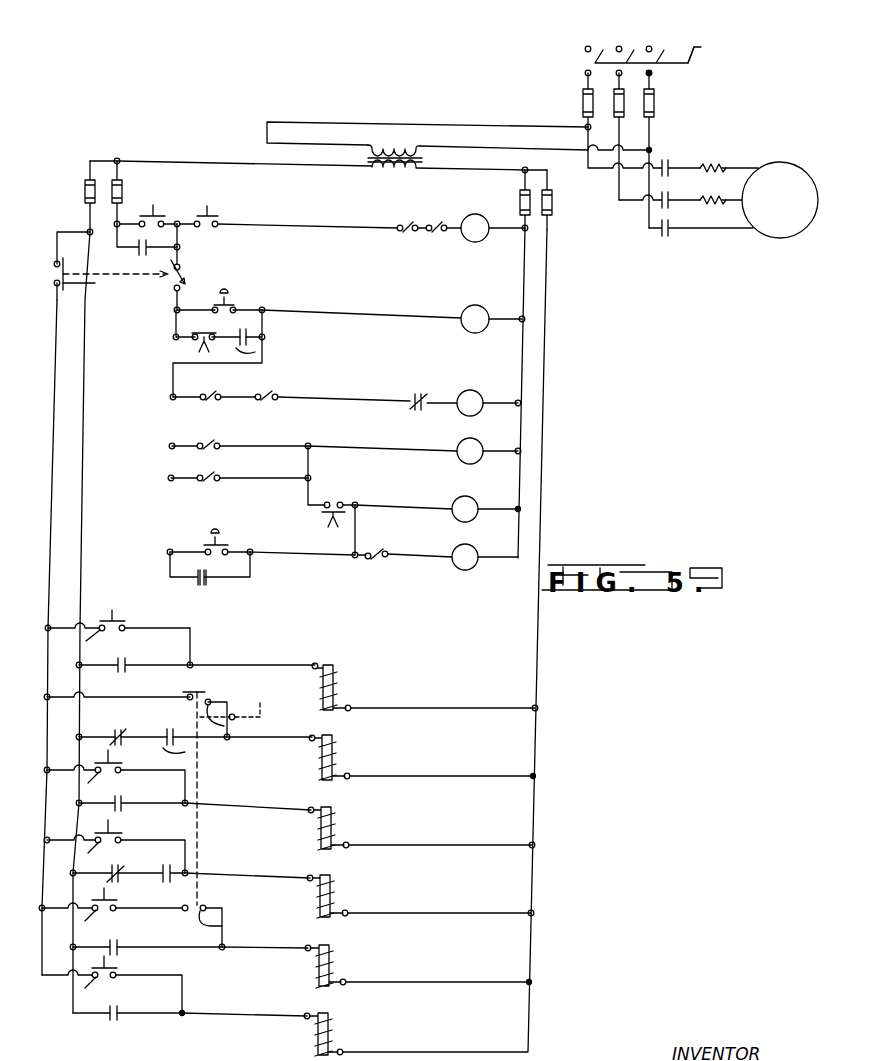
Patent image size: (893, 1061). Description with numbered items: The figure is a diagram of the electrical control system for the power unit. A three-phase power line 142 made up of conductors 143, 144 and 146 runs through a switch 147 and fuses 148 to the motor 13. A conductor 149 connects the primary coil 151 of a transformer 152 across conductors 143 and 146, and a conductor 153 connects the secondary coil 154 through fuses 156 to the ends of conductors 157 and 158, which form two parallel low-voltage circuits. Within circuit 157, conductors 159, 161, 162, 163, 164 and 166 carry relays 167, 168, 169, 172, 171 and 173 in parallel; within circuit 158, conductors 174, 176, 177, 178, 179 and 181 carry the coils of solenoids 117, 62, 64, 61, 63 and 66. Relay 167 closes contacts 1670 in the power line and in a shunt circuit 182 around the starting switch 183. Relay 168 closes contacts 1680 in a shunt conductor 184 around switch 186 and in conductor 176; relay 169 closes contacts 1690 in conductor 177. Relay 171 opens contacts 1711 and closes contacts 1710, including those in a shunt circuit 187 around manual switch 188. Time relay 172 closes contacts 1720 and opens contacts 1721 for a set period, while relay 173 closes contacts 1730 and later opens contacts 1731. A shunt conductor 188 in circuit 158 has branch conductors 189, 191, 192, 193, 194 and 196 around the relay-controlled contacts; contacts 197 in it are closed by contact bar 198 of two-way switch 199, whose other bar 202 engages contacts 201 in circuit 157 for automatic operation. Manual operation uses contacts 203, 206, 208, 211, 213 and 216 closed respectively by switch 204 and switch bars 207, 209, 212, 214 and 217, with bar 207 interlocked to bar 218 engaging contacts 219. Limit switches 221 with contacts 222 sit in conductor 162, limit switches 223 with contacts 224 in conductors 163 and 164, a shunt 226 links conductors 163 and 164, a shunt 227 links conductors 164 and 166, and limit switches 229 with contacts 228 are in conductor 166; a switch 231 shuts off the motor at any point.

The motor 13 is at (784, 239).
The three-phase power line 142 is at (572, 47).
The conductor 143 is at (593, 45).
The conductor 144 is at (623, 46).
The conductor 146 is at (655, 46).
The switch 147 is at (672, 68).
The fuses 148 is at (653, 104).
The conductor 149 is at (422, 123).
The primary coil 151 is at (393, 140).
The transformer 152 is at (436, 160).
The conductor 153 is at (175, 161).
The secondary coil 154 is at (376, 172).
The fuses 156 is at (86, 185).
The conductor 157 is at (121, 222).
The conductor 158 is at (91, 516).
The conductor 159 is at (346, 236).
The conductor 161 is at (345, 313).
The conductor 162 is at (333, 400).
The conductor 163 is at (371, 452).
The conductor 164 is at (384, 505).
The conductor 166 is at (280, 557).
The relay 167 is at (470, 240).
The relay 168 is at (483, 308).
The relay 169 is at (488, 382).
The relay 171 is at (466, 496).
The time relay 172 is at (467, 440).
The relay 173 is at (467, 546).
The conductor 174 is at (402, 706).
The conductor 176 is at (405, 774).
The conductor 177 is at (402, 845).
The conductor 178 is at (405, 913).
The conductor 179 is at (402, 982).
The conductor 181 is at (424, 1052).
The shunt circuit 182 is at (160, 247).
The starting switch 183 is at (160, 212).
The shunt conductor 184 is at (172, 333).
The switch 186 is at (231, 306).
The shunt circuit 187 is at (168, 578).
The shunt circuit conductor 188 is at (55, 445).
The branch conductor 189 is at (185, 634).
The branch conductor 191 is at (164, 696).
The branch conductor 192 is at (199, 783).
The branch conductor 193 is at (199, 836).
The branch conductor 194 is at (198, 903).
The branch conductor 196 is at (182, 975).
The contacts 197 is at (55, 285).
The contact bar 198 is at (66, 283).
The two-way contact switch 199 is at (134, 268).
The contacts 201 is at (186, 272).
The contact bar 202 is at (172, 290).
The contacts 203 is at (95, 634).
The manually operable switch 204 is at (119, 620).
The contacts 206 is at (225, 724).
The switch bar 207 is at (210, 700).
The contacts 208 is at (93, 776).
The switch bar 209 is at (110, 766).
The contacts 211 is at (93, 846).
The switch bar 212 is at (112, 833).
The contacts 213 is at (92, 915).
The switch bar 214 is at (112, 900).
The contacts 216 is at (92, 981).
The switch bar 217 is at (112, 968).
The switch bar 218 is at (212, 927).
The contacts 219 is at (208, 910).
The limit switches 221 is at (268, 395).
The contacts 222 is at (215, 401).
The limit switches 223 is at (205, 487).
The contacts 224 is at (220, 452).
The shunt circuit 226 is at (310, 466).
The shunt circuit 227 is at (352, 536).
The contacts 228 is at (389, 561).
The limit switches 229 is at (370, 560).
The switch 231 is at (219, 215).
The solenoid 117 is at (340, 676).
The solenoid 62 is at (340, 744).
The solenoid 64 is at (340, 814).
The solenoid 61 is at (338, 881).
The solenoid 63 is at (340, 950).
The solenoid 66 is at (340, 1018).
The contacts 1670 is at (660, 227).
The contacts 1680 is at (256, 352).
The contacts 1690 is at (122, 800).
The contacts 1710 is at (201, 588).
The contacts 1711 is at (427, 380).
The contacts 1720 is at (172, 870).
The contacts 1721 is at (334, 501).
The contacts 1730 is at (125, 659).
The contacts 1731 is at (192, 348).